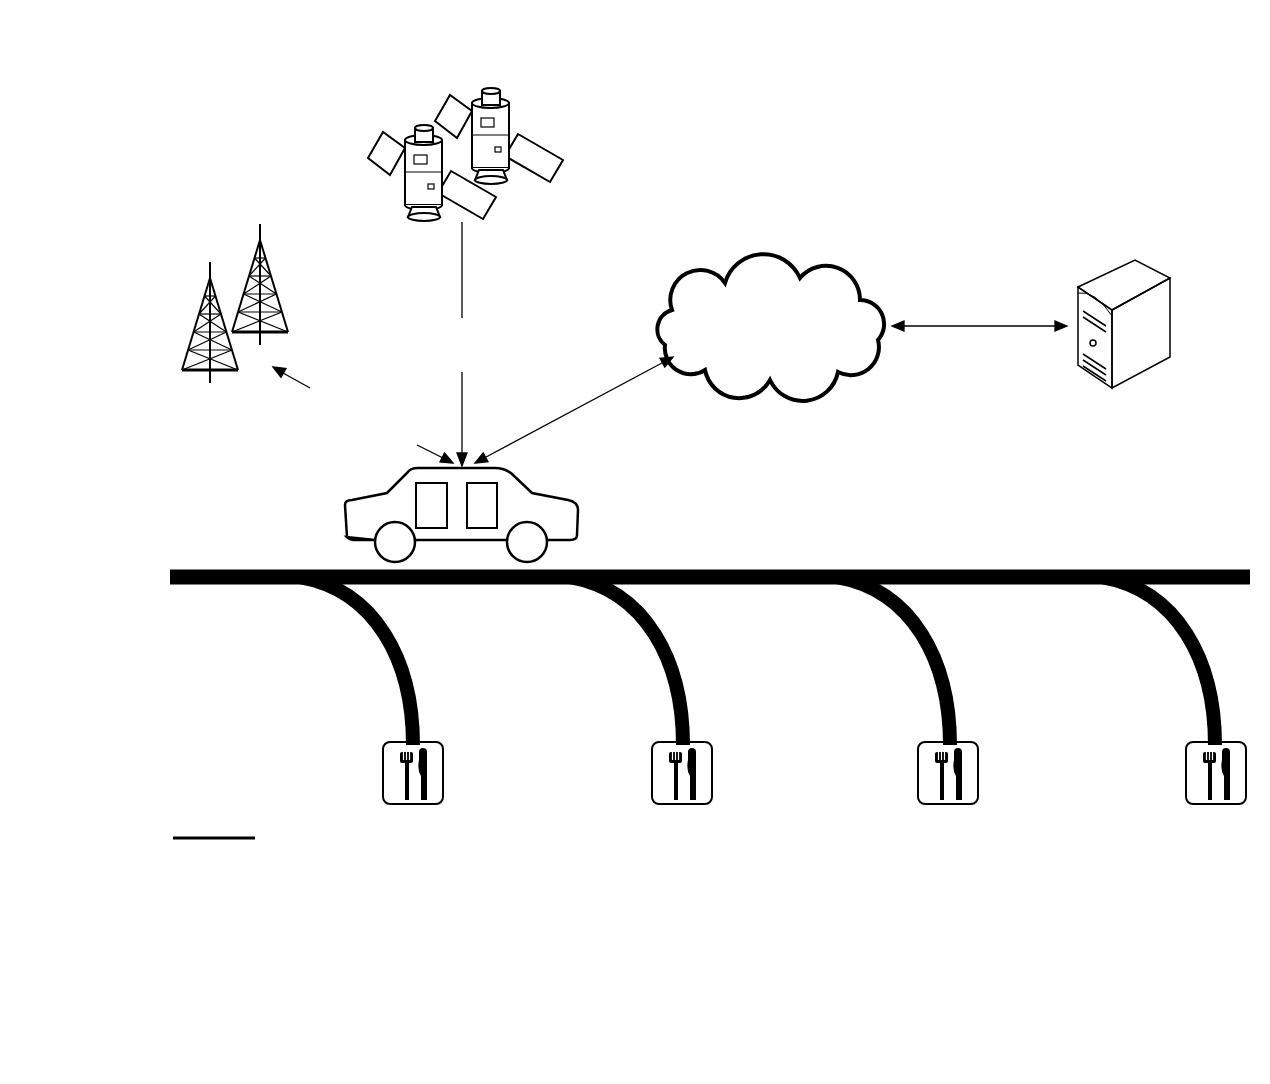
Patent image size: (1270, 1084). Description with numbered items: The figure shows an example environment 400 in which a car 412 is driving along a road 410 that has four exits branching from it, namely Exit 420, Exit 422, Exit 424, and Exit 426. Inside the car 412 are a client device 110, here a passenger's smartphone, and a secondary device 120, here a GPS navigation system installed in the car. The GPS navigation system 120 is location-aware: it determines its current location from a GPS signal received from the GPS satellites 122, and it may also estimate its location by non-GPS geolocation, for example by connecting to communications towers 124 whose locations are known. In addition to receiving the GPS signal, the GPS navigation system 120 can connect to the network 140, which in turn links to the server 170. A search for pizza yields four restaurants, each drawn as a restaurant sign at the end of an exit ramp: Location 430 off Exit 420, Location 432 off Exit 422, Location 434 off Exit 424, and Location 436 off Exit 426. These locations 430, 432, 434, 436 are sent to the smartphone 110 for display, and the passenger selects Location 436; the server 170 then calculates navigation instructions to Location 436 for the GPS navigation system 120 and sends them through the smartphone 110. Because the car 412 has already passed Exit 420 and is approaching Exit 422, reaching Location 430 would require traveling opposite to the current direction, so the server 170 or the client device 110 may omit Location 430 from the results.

The example environment 400 is at (232, 779).
The GPS satellites 122 is at (408, 82).
The communications towers 124 is at (274, 171).
The server 170 is at (1113, 247).
The network 140 is at (787, 322).
The car 412 is at (380, 522).
The client device 110 is at (443, 519).
The secondary device 120 is at (493, 519).
The road 410 is at (1200, 556).
The Exit 420 is at (350, 637).
The Exit 422 is at (618, 637).
The Exit 424 is at (885, 637).
The Exit 426 is at (1150, 637).
The Location 430 is at (475, 831).
The Location 432 is at (743, 831).
The Location 434 is at (1010, 831).
The Location 436 is at (1258, 831).